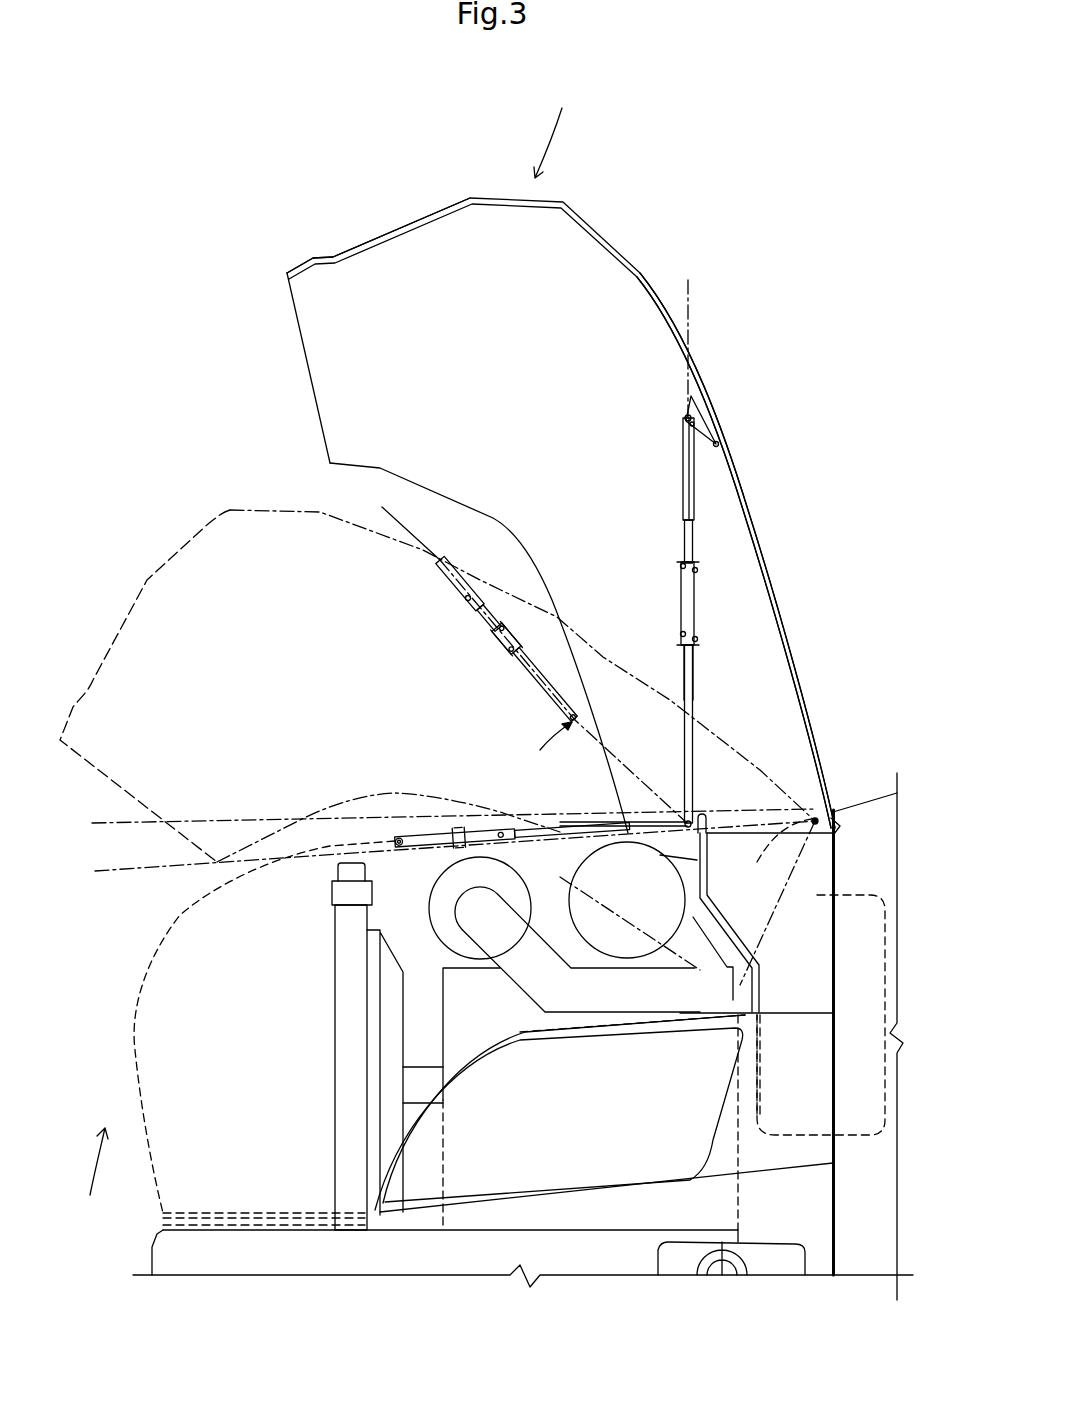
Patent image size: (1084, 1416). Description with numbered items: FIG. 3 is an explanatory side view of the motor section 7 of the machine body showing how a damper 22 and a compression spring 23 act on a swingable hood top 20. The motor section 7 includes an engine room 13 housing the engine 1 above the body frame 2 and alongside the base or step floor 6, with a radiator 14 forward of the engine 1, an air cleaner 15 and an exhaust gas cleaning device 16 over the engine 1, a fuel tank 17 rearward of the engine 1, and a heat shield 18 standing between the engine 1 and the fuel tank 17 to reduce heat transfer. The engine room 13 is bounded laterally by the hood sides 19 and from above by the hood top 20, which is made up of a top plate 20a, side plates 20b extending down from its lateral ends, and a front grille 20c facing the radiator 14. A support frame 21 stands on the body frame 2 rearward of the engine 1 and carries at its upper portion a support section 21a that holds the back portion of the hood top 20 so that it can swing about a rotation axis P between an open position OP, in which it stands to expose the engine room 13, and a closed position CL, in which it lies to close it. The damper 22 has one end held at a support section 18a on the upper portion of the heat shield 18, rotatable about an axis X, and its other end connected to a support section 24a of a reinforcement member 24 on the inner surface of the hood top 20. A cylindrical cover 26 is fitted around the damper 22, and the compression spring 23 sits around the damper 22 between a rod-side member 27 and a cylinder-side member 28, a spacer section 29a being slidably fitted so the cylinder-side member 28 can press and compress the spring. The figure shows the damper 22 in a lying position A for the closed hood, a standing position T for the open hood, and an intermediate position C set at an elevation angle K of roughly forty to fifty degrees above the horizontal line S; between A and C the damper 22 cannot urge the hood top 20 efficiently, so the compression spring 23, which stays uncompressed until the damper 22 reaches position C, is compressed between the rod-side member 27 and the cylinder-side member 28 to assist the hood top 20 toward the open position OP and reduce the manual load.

The engine 1 is at (602, 1212).
The body frame 2 is at (826, 1289).
The base / step floor 6 is at (248, 1268).
The motor section 7 is at (95, 940).
The engine room 13 is at (168, 1052).
The radiator 14 is at (343, 993).
The air cleaner 15 is at (432, 925).
The exhaust gas cleaning device 16 is at (597, 870).
The fuel tank 17 is at (820, 908).
The heat shield 18 is at (760, 1000).
The support section 18a is at (708, 823).
The hood sides 19 is at (488, 1162).
The hood top 20 is at (600, 225).
The top plate 20a is at (770, 550).
The side plates 20b is at (732, 605).
The front grille 20c is at (397, 222).
The support frame 21 is at (878, 1158).
The support section 21a is at (825, 832).
The damper 22 is at (683, 456).
The compression spring 23 is at (680, 563).
The reinforcement member 24 is at (712, 447).
The support section 24a is at (684, 412).
The cylindrical cover 26 is at (692, 668).
The rod-side member 27 is at (688, 642).
The cylinder-side member 28 is at (694, 424).
The spacer section 29a is at (684, 520).
The line S is at (441, 824).
The lying position A is at (443, 856).
The intermediate position C is at (522, 648).
The standing position T is at (687, 335).
The elevation angle K is at (627, 772).
The axis X is at (631, 895).
The rotation axis P is at (779, 857).
The open position OP is at (557, 125).
The closed position CL is at (82, 1175).